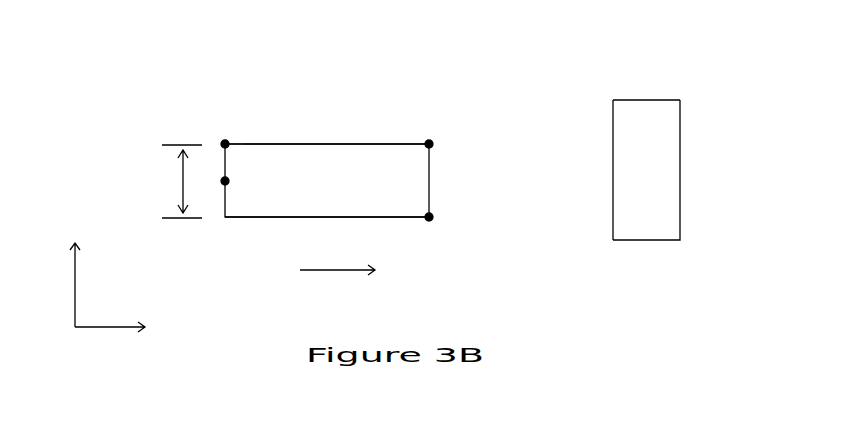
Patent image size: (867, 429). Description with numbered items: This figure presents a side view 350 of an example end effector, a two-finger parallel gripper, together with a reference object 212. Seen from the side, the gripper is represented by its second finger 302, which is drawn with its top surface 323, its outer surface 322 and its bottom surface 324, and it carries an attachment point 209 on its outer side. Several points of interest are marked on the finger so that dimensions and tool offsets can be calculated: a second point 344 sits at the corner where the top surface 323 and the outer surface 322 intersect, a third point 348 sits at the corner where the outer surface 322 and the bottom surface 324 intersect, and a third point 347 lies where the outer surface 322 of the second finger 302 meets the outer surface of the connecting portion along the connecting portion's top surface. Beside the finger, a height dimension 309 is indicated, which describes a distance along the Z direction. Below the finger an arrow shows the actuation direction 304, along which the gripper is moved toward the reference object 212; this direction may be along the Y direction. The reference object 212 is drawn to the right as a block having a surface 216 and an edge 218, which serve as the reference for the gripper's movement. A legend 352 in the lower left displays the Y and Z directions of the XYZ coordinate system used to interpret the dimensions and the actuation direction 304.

The side view 350 is at (315, 127).
The third point 347 is at (225, 144).
The second point 344 is at (429, 144).
The third point 348 is at (429, 217).
The attachment point 209 is at (223, 183).
The top surface 323 is at (243, 144).
The outer surface 322 is at (288, 157).
The second finger 302 is at (355, 155).
The bottom surface 324 is at (343, 217).
The height dimension 309 is at (182, 169).
The actuation direction 304 is at (312, 270).
The legend 352 is at (108, 335).
The reference object 212 is at (658, 107).
The surface 216 is at (672, 192).
The edge 218 is at (613, 175).